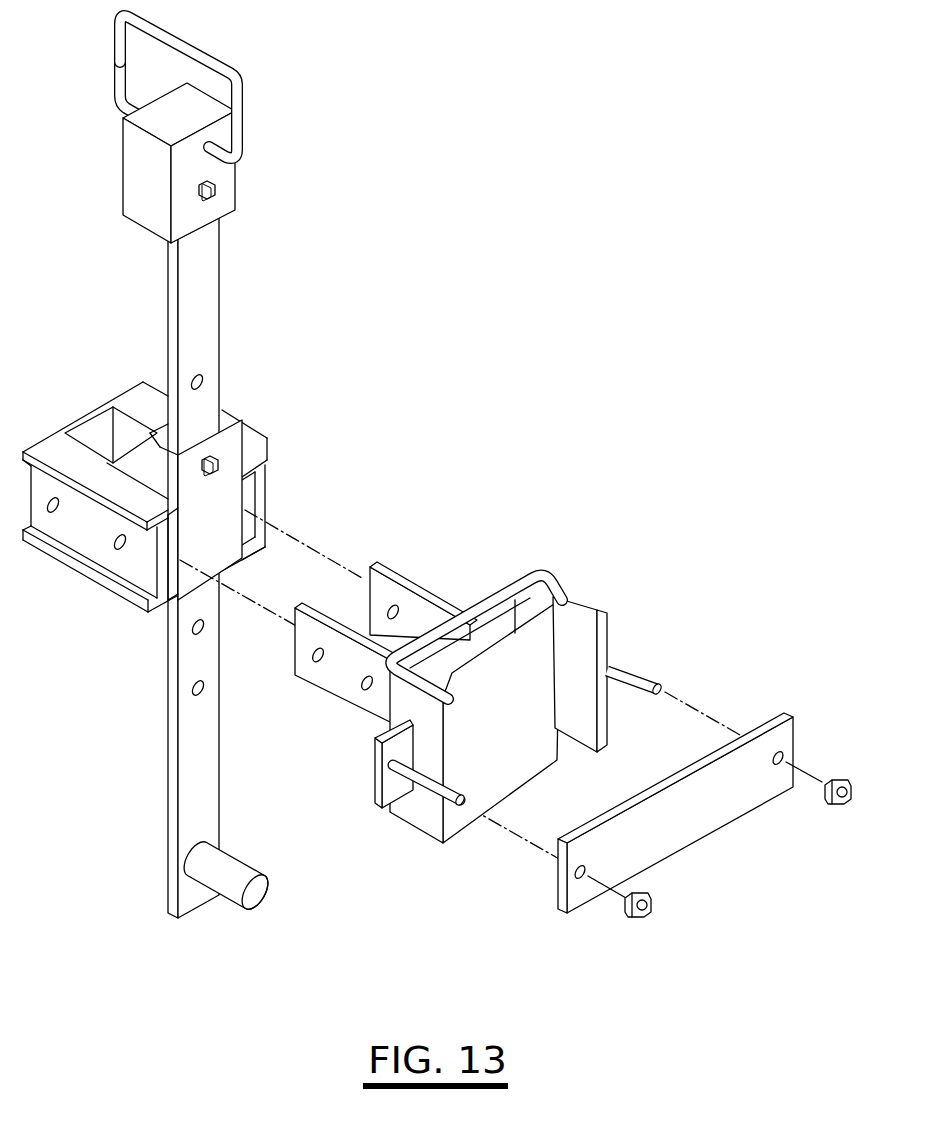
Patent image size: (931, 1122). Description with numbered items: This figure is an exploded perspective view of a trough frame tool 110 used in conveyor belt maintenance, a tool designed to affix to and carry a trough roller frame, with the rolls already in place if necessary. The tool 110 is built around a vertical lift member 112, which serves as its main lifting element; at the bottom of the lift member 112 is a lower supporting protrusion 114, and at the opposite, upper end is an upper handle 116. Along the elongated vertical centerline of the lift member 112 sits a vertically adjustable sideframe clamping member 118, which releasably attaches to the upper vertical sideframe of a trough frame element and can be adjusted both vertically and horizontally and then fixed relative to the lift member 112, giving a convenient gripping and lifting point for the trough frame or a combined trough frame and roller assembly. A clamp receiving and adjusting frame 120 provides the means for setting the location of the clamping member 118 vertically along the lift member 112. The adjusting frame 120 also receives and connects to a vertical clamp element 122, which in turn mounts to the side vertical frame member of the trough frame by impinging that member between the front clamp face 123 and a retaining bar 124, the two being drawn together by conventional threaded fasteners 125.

The trough frame tool 110 is at (600, 196).
The vertical lift member 112 is at (197, 730).
The lower supporting protrusion 114 is at (265, 907).
The upper handle 116 is at (180, 38).
The sideframe clamping member 118 is at (643, 665).
The clamp receiving and adjusting frame 120 is at (258, 440).
The vertical clamp element 122 is at (437, 590).
The front clamp face 123 is at (523, 703).
The retaining bar 124 is at (665, 818).
The threaded fasteners 125 is at (650, 908).